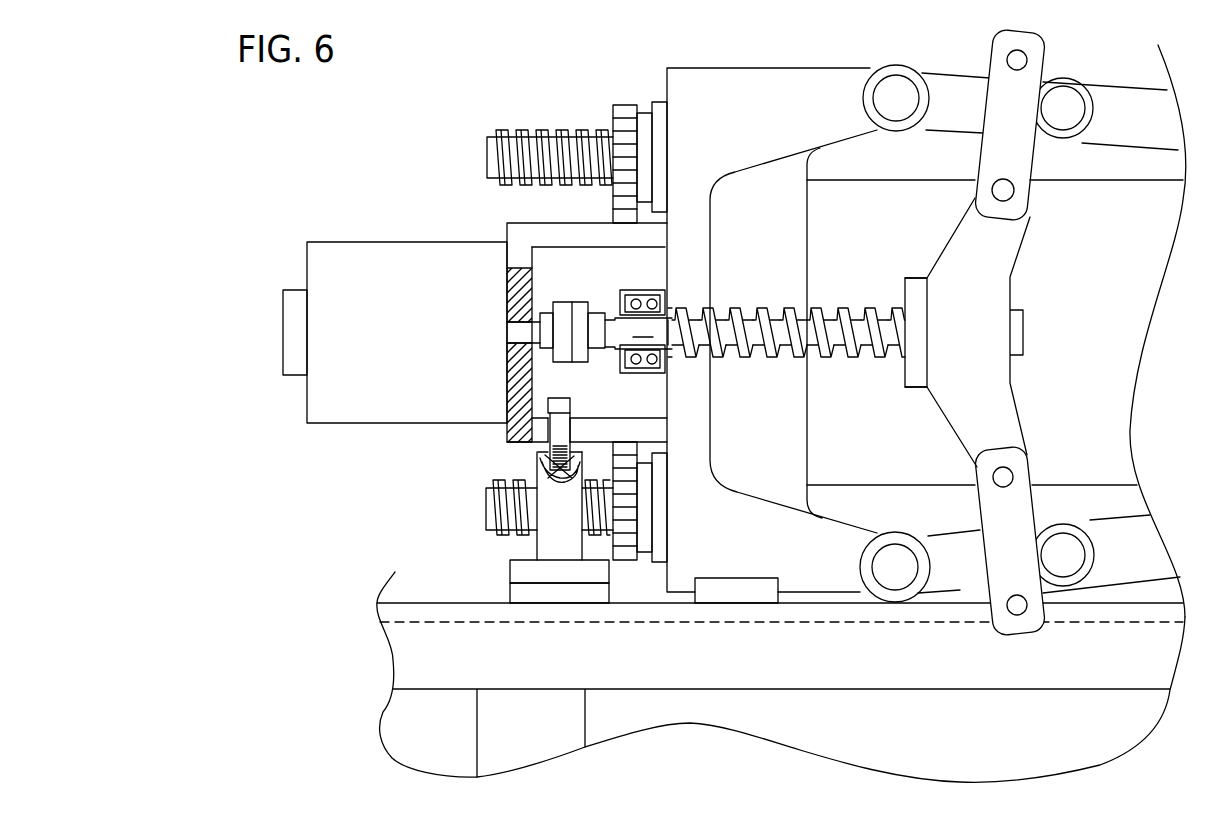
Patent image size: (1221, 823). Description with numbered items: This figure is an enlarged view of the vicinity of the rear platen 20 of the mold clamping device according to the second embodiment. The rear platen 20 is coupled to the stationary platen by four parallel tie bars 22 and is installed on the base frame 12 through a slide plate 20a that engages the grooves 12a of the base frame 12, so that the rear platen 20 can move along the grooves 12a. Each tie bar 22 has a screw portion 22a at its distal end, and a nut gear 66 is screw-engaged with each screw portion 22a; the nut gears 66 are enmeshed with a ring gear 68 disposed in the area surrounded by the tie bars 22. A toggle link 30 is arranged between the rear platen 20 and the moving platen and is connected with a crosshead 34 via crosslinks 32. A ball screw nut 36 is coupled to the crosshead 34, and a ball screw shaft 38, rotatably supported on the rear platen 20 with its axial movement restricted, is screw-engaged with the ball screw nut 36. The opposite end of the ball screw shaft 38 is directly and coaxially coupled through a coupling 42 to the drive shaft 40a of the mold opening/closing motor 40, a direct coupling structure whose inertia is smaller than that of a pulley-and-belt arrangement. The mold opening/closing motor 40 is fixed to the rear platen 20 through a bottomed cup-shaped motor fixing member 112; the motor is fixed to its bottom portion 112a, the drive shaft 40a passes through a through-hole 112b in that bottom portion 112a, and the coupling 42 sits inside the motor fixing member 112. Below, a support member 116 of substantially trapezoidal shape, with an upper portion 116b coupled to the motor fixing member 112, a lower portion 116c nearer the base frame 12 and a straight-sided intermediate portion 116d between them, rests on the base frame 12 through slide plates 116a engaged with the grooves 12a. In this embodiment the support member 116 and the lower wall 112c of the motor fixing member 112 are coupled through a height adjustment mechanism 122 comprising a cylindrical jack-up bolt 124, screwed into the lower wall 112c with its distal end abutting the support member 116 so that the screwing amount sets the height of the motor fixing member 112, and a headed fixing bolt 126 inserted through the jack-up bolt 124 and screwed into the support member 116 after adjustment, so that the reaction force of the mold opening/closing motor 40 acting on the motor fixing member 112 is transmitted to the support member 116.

The base frame 12 is at (410, 660).
The grooves 12a is at (415, 620).
The rear platen 20 is at (699, 93).
The slide plate 20a is at (740, 589).
The tie bars 22 is at (878, 163).
The screw portion 22a is at (505, 147).
The toggle link 30 is at (952, 578).
The crosslinks 32 is at (1000, 92).
The crosshead 34 is at (995, 400).
The ball screw nut 36 is at (917, 377).
The ball screw shaft 38 is at (853, 340).
The mold opening/closing motor 40 is at (322, 265).
The drive shaft 40a is at (523, 339).
The coupling 42 is at (561, 308).
The nut gear 66 is at (625, 118).
The ring gear 68 is at (610, 213).
The motor fixing member 112 is at (518, 230).
The bottom portion 112a is at (522, 300).
The through-hole 112b is at (511, 328).
The lower wall 112c is at (655, 472).
The support member 116 is at (509, 561).
The slide plates 116a is at (500, 585).
The upper portion 116b is at (540, 462).
The lower portion 116c is at (520, 572).
The intermediate portion 116d is at (560, 515).
The height adjustment mechanism 122 is at (577, 407).
The jack-up bolt 124 is at (541, 432).
The fixing bolt 126 is at (554, 402).